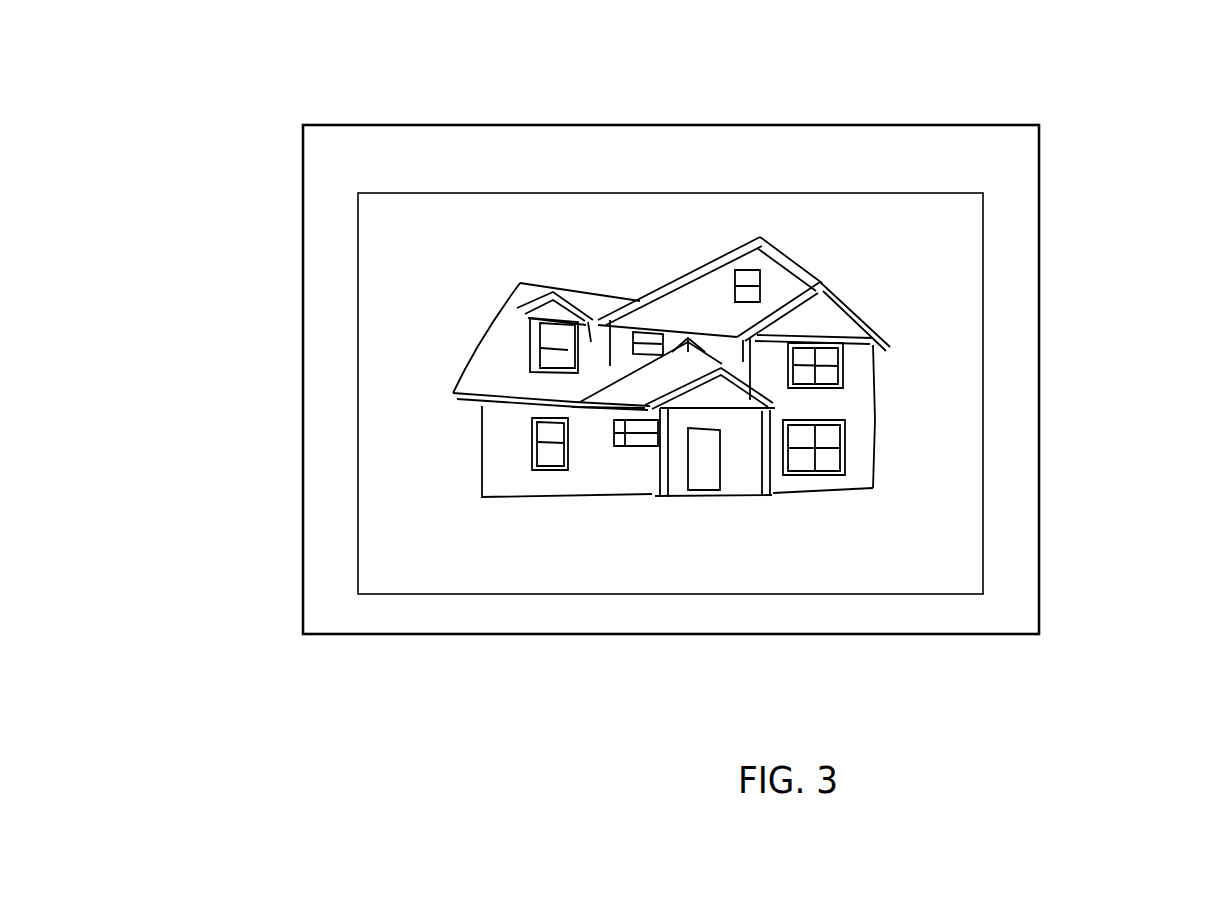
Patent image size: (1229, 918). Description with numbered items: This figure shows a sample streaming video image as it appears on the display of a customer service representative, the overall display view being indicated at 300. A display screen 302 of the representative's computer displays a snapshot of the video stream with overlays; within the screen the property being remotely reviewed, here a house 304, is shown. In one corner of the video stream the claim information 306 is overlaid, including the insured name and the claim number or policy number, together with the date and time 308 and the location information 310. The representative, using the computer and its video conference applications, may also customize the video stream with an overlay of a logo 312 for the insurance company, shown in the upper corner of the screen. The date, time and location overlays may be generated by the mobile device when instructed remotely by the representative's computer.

The image display / photograph 300 is at (952, 124).
The display screen 302 is at (459, 220).
The photographed property (house) 304 is at (497, 425).
The claim information 306 is at (400, 526).
The date and time 308 is at (402, 548).
The location information 310 is at (413, 578).
The logo 312 is at (968, 213).